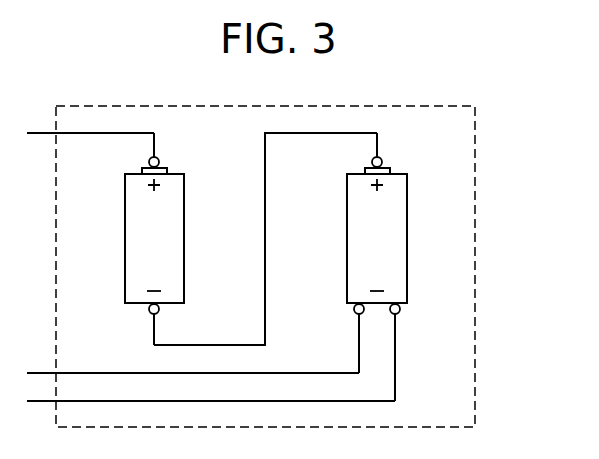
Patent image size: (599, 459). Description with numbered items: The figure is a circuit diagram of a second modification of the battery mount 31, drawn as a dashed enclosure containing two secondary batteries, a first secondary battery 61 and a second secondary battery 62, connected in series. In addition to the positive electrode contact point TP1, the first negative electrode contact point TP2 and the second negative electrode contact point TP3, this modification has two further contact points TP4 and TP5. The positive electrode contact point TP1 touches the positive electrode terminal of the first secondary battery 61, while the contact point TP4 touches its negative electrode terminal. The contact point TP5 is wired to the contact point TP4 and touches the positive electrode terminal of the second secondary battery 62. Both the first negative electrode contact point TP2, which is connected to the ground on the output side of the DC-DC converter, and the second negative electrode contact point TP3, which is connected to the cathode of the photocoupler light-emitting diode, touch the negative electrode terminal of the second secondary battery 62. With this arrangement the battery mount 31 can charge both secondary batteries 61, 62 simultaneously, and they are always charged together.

The battery mount 31 is at (477, 143).
The first secondary battery 61 is at (164, 220).
The second secondary battery 62 is at (387, 220).
The positive electrode contact point TP1 is at (180, 150).
The first negative electrode contact point TP2 is at (335, 338).
The second negative electrode contact point TP3 is at (419, 352).
The contact point TP4 is at (130, 324).
The contact point TP5 is at (401, 150).